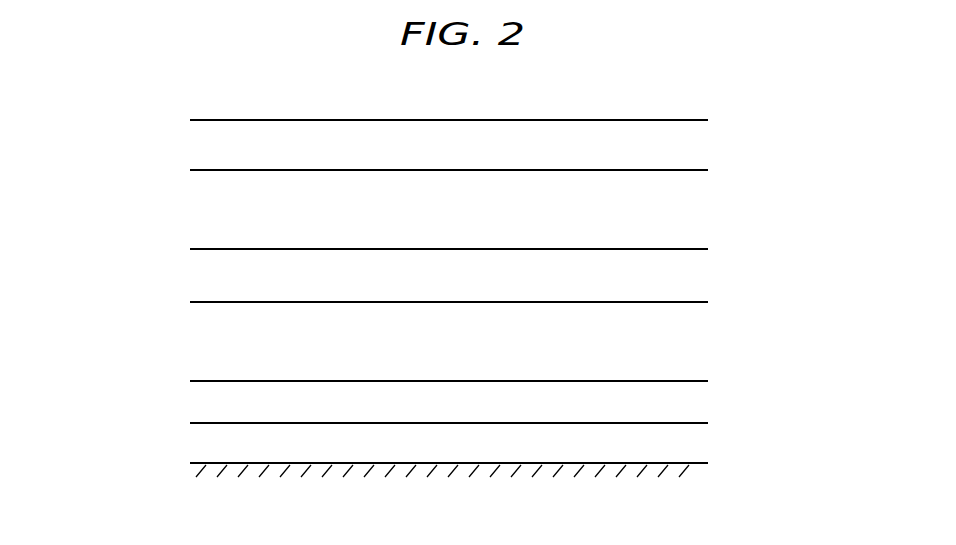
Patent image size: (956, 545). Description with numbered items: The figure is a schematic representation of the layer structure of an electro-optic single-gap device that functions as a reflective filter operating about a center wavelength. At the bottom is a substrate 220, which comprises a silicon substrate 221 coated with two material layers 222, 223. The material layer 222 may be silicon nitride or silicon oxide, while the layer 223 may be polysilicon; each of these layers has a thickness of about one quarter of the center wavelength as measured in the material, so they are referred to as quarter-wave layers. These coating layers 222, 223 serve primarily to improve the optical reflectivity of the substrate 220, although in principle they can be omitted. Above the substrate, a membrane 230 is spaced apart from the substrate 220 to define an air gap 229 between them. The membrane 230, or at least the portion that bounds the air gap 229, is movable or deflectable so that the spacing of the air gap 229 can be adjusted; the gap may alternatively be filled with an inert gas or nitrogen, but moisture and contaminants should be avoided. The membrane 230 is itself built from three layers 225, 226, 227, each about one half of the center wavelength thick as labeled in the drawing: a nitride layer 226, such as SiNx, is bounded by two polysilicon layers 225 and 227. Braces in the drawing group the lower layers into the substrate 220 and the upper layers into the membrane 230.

The substrate 220 is at (464, 422).
The silicon substrate 221 is at (212, 463).
The material layer 222 is at (208, 444).
The material layer 223 is at (208, 402).
The polysilicon layer 225 is at (208, 276).
The nitride layer 226 is at (208, 209).
The polysilicon layer 227 is at (208, 146).
The air gap 229 is at (208, 341).
The membrane 230 is at (463, 211).